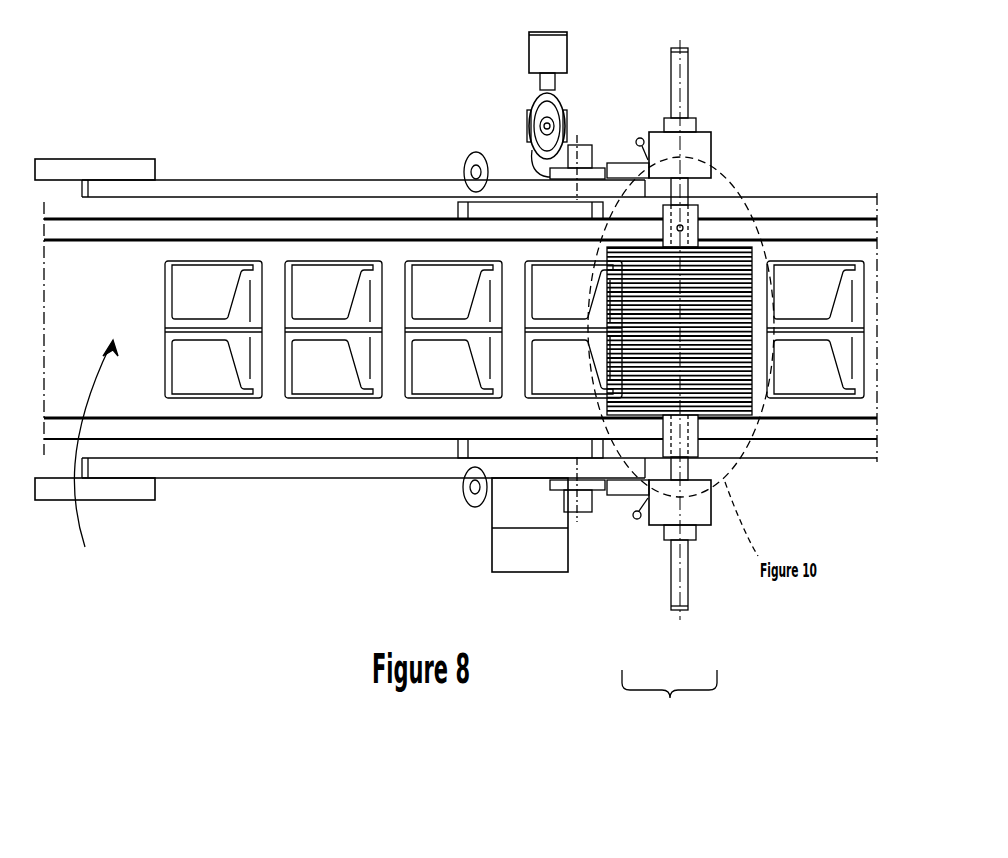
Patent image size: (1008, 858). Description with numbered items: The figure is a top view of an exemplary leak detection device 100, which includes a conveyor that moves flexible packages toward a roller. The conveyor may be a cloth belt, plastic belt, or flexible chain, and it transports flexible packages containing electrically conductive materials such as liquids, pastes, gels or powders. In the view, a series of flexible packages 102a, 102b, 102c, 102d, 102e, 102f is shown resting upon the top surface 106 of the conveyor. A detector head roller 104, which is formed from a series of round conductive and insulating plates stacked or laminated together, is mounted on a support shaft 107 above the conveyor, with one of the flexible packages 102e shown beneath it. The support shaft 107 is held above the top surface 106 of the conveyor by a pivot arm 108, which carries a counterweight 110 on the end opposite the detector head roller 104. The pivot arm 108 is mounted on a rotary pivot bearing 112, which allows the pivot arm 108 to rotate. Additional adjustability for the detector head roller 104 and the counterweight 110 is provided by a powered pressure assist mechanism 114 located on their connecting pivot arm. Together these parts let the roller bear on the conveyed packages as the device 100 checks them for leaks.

The leak detection device 100 is at (669, 701).
The flexible package 102a is at (211, 262).
The flexible package 102b is at (318, 262).
The flexible package 102c is at (428, 262).
The flexible package 102d is at (556, 400).
The flexible package 102e is at (768, 462).
The flexible package 102f is at (812, 262).
The detector head roller 104 is at (735, 237).
The top surface of conveyor 106 is at (96, 461).
The support shaft 107 is at (690, 565).
The pivot arm 108 is at (232, 480).
The counterweight 110 is at (103, 158).
The rotary pivot bearing 112 is at (578, 512).
The powered pressure assist mechanism 114 is at (563, 100).